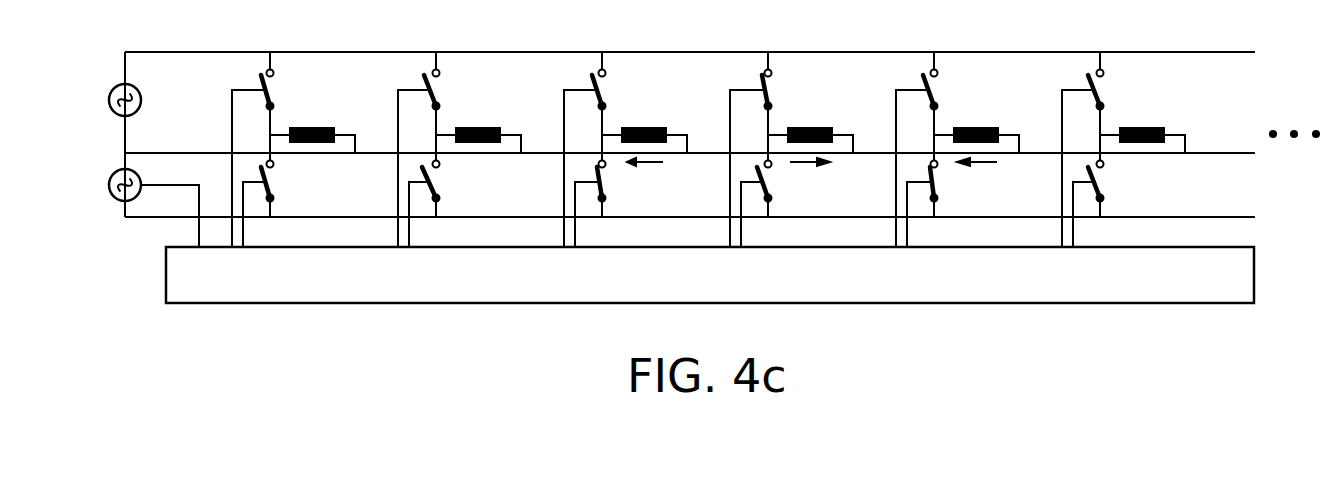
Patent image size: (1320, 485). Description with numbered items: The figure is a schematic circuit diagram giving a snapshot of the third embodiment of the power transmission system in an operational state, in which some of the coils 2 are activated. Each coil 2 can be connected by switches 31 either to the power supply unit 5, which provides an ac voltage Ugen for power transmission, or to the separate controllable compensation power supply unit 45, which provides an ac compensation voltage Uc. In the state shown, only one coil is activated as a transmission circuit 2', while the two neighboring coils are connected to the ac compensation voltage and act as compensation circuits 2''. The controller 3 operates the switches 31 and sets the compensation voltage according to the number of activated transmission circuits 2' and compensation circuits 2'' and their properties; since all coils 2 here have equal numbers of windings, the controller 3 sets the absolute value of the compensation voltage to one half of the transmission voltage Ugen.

The power supply unit 5 is at (110, 88).
The controllable compensation power supply unit 45 is at (110, 172).
The controller 3 is at (166, 275).
The switches 31 is at (258, 74).
The coil 2 is at (727, 114).
The transmission circuit 2' is at (810, 114).
The compensation circuit 2'' is at (810, 114).